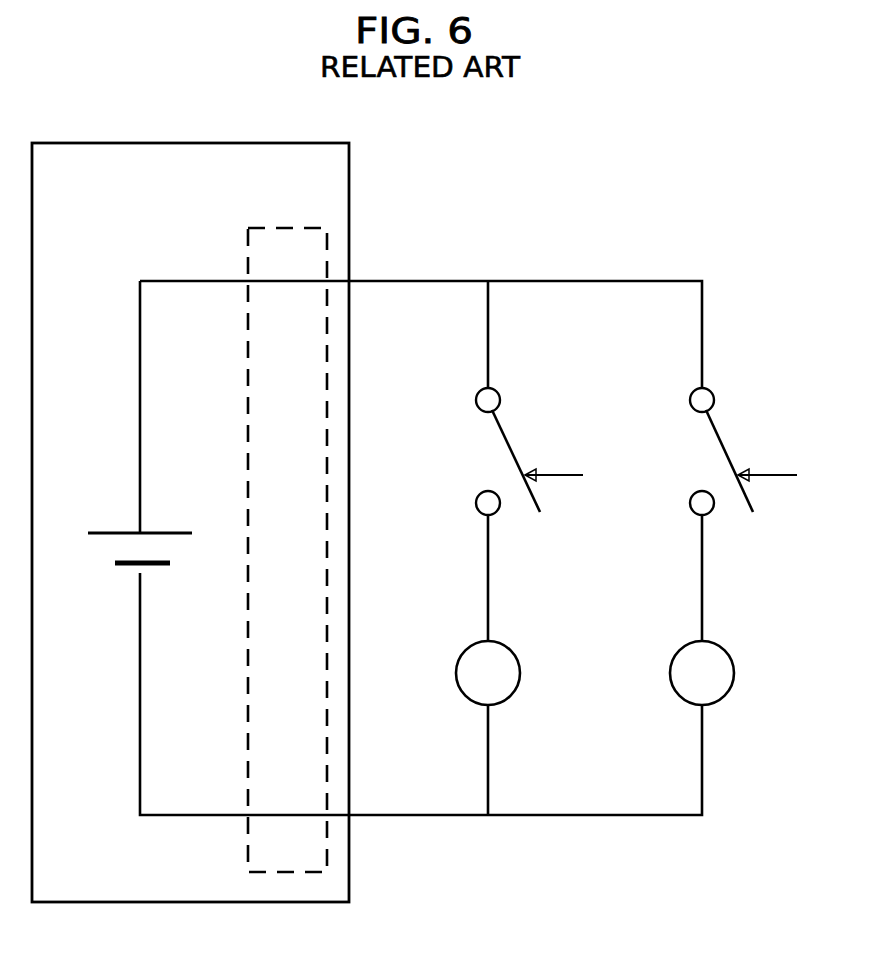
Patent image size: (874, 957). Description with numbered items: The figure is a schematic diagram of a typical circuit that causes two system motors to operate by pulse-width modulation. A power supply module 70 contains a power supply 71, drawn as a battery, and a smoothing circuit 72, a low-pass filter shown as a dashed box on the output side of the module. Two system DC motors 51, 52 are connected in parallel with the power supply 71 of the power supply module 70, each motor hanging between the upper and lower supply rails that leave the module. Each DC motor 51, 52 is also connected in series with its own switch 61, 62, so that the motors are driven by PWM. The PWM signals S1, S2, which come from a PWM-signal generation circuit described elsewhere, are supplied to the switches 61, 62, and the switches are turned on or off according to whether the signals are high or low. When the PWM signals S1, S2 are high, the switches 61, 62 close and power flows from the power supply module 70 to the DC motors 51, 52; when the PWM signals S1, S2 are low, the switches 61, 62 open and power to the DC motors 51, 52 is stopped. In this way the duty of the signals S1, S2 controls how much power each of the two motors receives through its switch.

The power supply module 70 is at (188, 143).
The power supply 71 is at (112, 549).
The smoothing circuit (low-pass filter) 72 is at (287, 223).
The switch 61 is at (508, 440).
The switch 62 is at (730, 457).
The PWM signal S1 is at (577, 476).
The PWM signal S2 is at (791, 476).
The DC motor 51 is at (510, 648).
The DC motor 52 is at (724, 648).